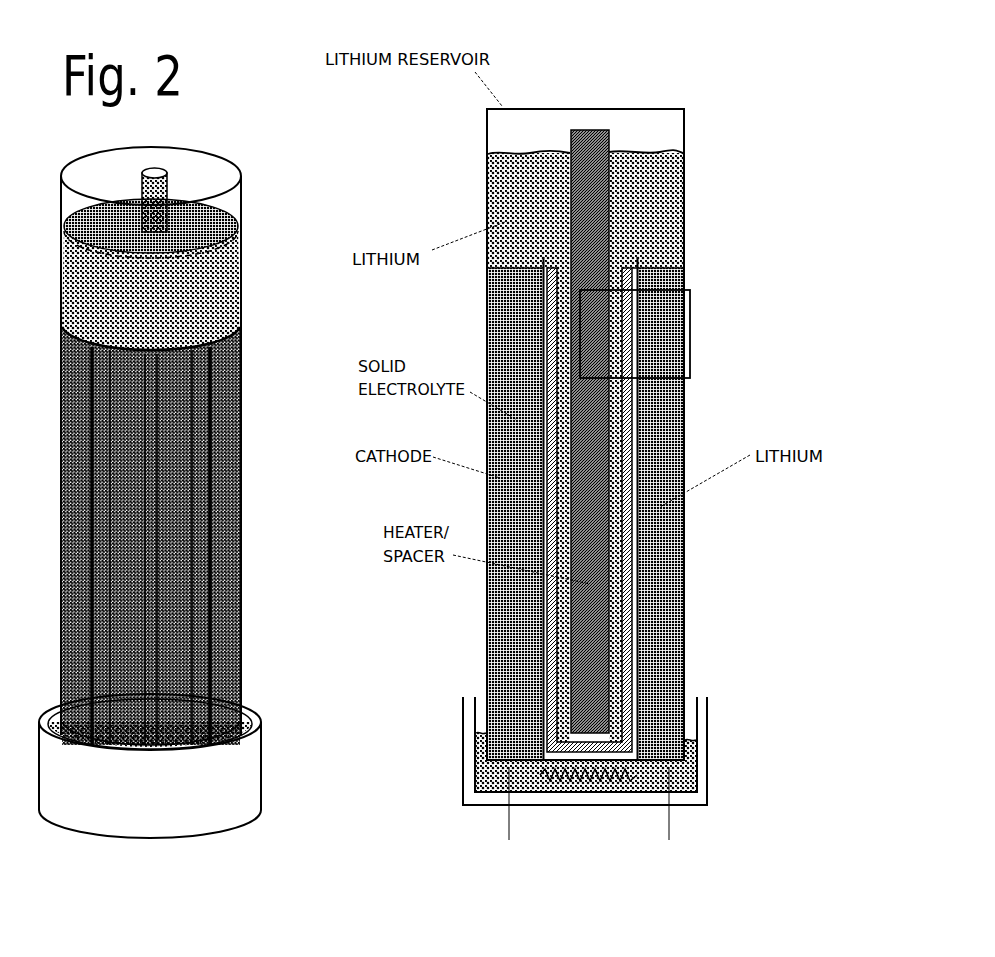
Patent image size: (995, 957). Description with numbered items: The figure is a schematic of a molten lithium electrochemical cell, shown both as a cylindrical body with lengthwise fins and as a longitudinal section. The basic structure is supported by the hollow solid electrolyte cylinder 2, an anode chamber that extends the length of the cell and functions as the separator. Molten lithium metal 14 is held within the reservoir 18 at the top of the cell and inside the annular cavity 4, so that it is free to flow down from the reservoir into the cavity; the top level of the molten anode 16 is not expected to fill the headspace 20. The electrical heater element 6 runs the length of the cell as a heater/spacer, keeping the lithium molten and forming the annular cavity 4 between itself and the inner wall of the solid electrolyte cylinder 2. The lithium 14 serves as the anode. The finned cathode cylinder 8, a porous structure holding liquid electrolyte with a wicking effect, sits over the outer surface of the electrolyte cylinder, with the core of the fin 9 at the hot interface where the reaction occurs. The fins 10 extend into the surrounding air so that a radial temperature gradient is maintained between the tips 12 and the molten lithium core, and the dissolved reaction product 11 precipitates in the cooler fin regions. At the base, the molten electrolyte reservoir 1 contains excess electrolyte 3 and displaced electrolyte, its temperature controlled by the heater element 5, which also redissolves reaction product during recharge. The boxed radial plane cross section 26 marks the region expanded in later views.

The molten electrolyte reservoir 1 is at (462, 752).
The hollow solid electrolyte cylinder 2 is at (625, 455).
The excess electrolyte 3 is at (688, 772).
The annular cavity 4 is at (567, 330).
The heater element 5 is at (508, 808).
The electrical heater element 6 is at (590, 188).
The finned cathode cylinder 8 is at (515, 637).
The core of the fin 9 is at (541, 290).
The fins 10 is at (657, 601).
The dissolved reaction product 11 is at (573, 784).
The tips of the fins 12 is at (685, 641).
The molten lithium metal 14 is at (512, 212).
The top level of the molten anode 16 is at (518, 157).
The reservoir 18 is at (594, 109).
The headspace 20 is at (653, 128).
The radial plane cross section 26 is at (690, 296).